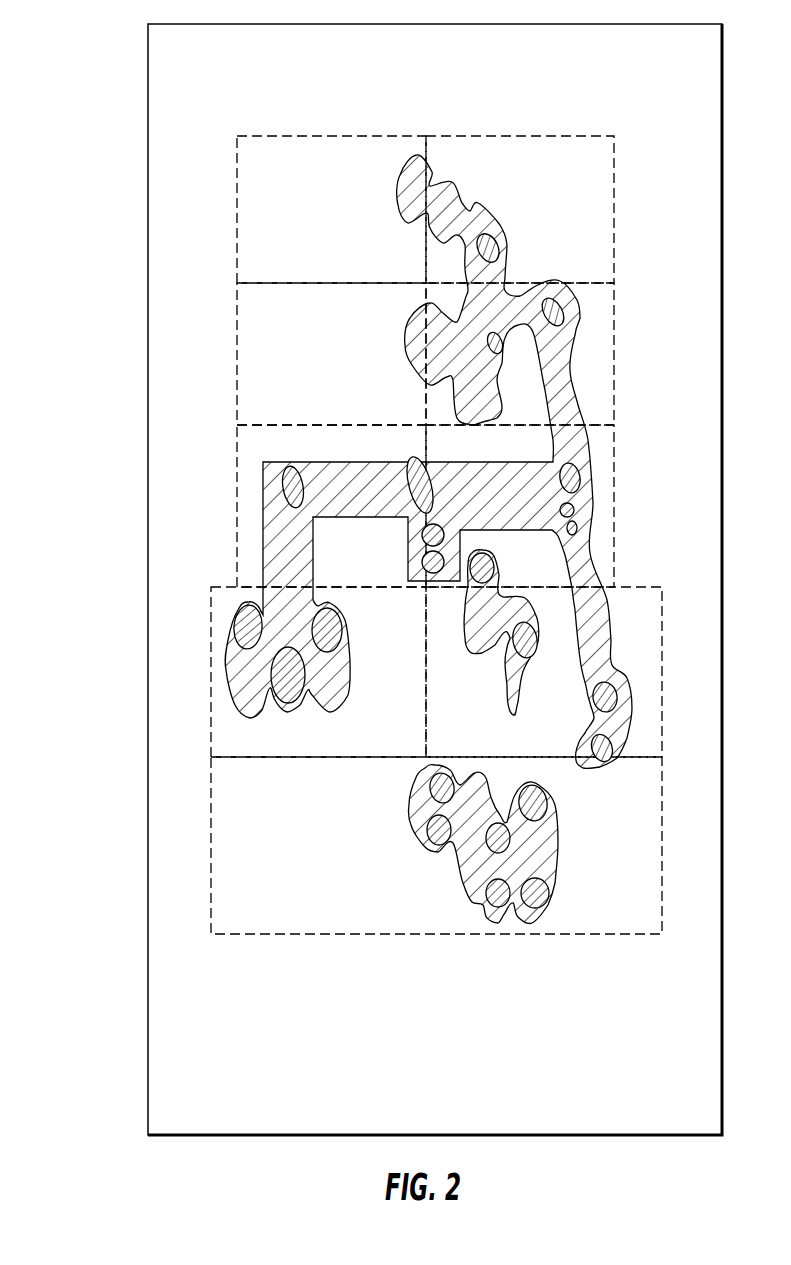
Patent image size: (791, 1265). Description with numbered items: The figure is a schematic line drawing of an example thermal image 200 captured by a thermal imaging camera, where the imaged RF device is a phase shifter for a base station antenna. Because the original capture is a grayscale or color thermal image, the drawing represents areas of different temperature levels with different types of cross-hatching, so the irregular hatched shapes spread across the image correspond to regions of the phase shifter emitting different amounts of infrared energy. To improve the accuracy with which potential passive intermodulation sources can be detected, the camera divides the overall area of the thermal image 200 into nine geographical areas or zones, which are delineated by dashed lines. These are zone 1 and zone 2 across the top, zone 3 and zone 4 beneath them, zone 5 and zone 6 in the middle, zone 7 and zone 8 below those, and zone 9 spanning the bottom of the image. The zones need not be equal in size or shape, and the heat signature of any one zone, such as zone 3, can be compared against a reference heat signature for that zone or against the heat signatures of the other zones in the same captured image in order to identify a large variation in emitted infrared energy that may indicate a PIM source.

The thermal image 200 is at (84, 66).
The zone 1 is at (331, 209).
The zone 2 is at (520, 209).
The zone 3 is at (331, 354).
The zone 4 is at (520, 354).
The zone 5 is at (331, 506).
The zone 6 is at (520, 506).
The zone 7 is at (318, 672).
The zone 8 is at (544, 672).
The zone 9 is at (436, 845).